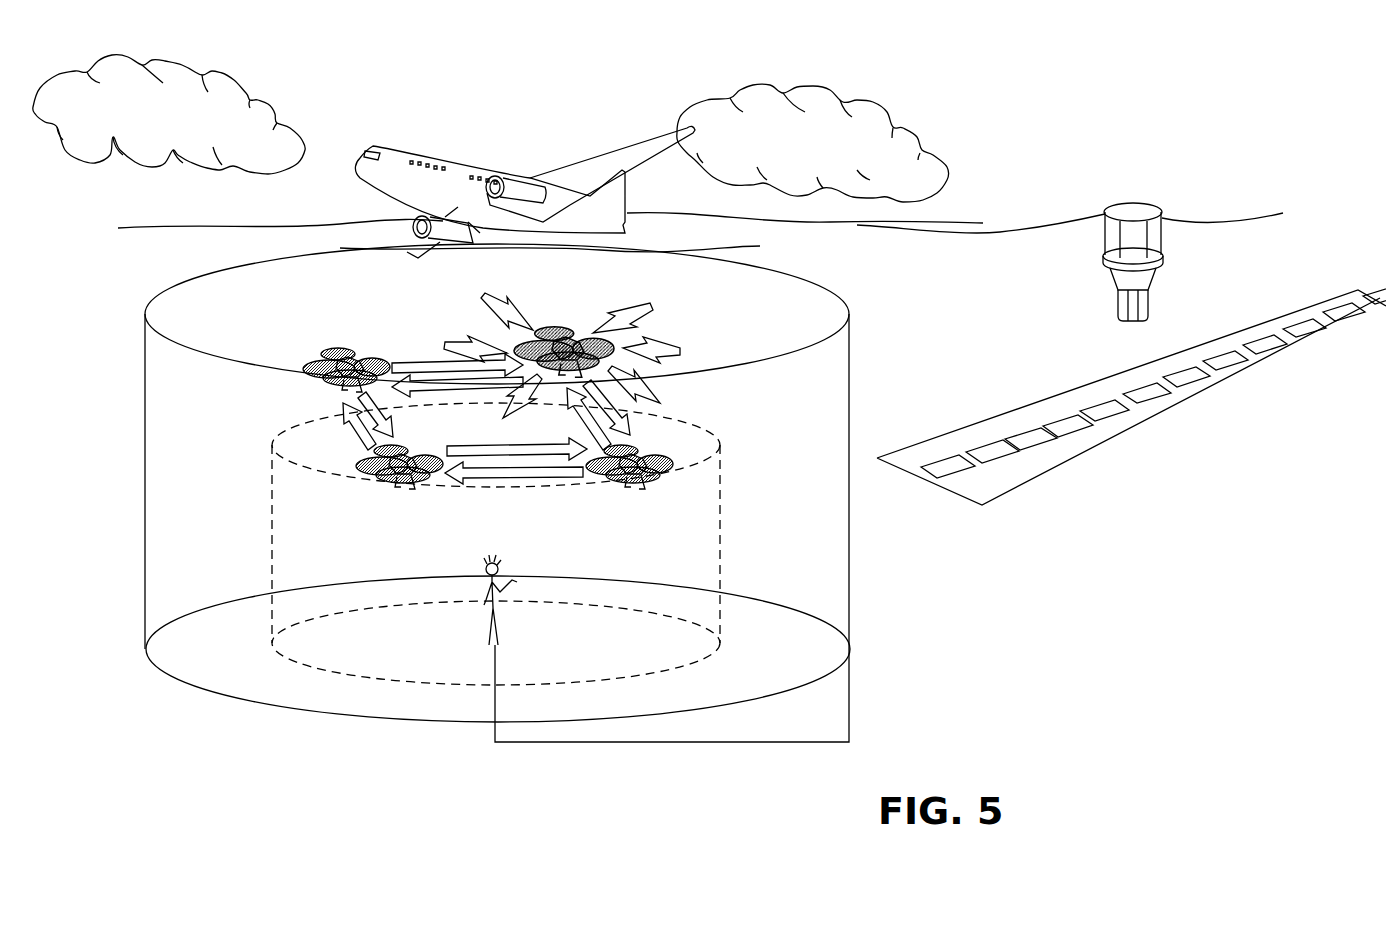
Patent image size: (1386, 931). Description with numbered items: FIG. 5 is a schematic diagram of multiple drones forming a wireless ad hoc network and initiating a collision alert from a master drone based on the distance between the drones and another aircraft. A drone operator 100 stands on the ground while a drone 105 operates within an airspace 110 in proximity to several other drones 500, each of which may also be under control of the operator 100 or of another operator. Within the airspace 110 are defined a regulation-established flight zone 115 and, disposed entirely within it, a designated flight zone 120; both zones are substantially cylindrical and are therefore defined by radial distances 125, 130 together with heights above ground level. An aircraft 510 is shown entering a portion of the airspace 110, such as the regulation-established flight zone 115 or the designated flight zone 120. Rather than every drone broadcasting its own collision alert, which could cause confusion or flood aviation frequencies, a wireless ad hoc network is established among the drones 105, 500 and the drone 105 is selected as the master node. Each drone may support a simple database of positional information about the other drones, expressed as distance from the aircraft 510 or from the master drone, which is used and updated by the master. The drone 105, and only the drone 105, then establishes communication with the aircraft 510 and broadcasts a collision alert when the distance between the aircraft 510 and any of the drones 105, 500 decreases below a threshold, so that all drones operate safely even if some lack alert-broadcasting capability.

The drone operator 100 is at (485, 622).
The drone 105 is at (554, 330).
The airspace 110 is at (379, 72).
The regulation-established flight zone 115 is at (201, 394).
The designated flight zone 120 is at (321, 507).
The radial distance 125 is at (802, 741).
The radial distance 130 is at (583, 642).
The other drones 500 is at (346, 348).
The aircraft 510 is at (462, 165).